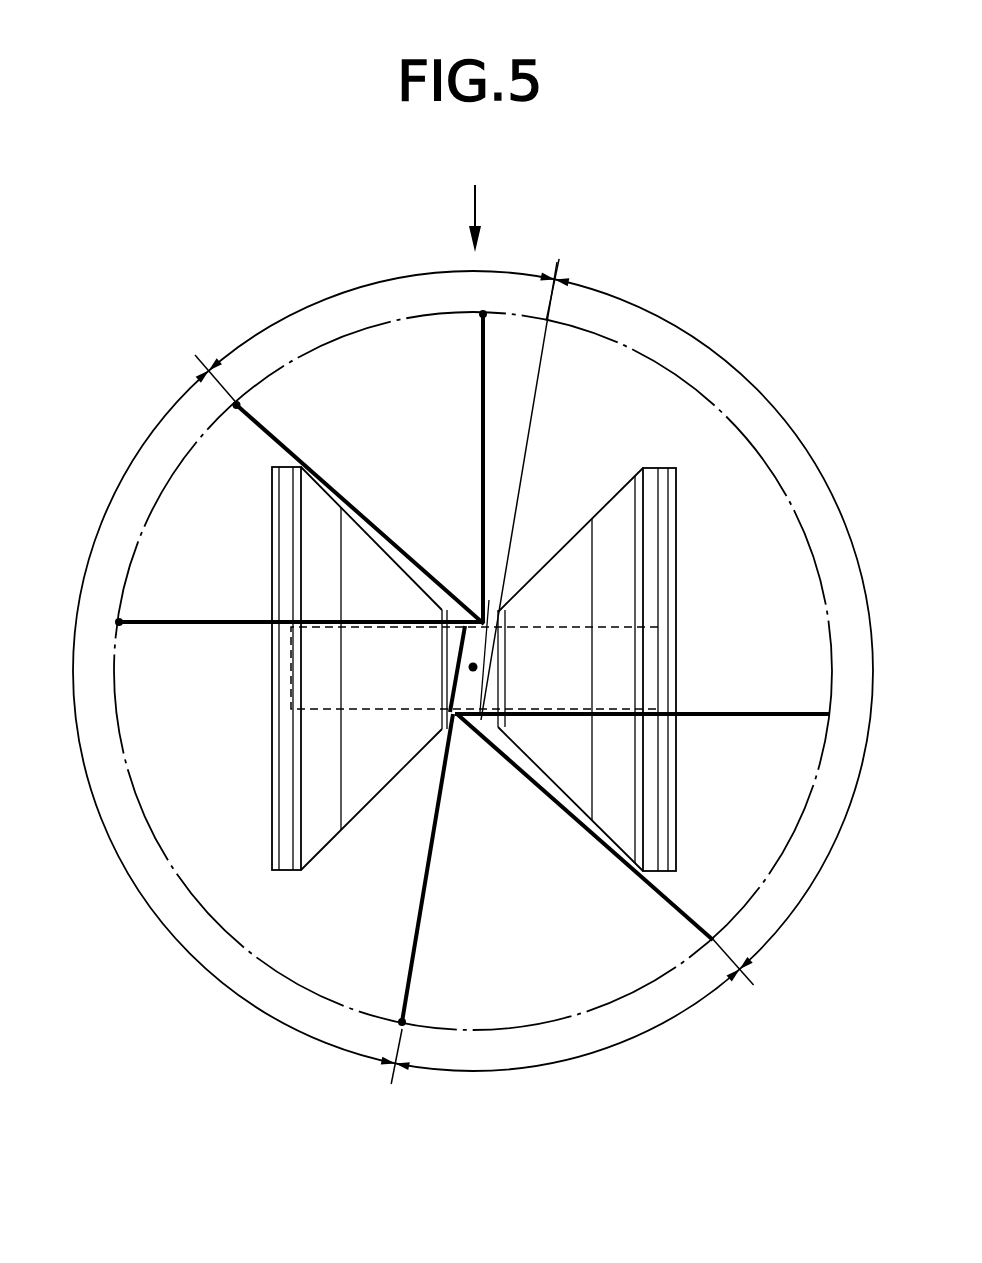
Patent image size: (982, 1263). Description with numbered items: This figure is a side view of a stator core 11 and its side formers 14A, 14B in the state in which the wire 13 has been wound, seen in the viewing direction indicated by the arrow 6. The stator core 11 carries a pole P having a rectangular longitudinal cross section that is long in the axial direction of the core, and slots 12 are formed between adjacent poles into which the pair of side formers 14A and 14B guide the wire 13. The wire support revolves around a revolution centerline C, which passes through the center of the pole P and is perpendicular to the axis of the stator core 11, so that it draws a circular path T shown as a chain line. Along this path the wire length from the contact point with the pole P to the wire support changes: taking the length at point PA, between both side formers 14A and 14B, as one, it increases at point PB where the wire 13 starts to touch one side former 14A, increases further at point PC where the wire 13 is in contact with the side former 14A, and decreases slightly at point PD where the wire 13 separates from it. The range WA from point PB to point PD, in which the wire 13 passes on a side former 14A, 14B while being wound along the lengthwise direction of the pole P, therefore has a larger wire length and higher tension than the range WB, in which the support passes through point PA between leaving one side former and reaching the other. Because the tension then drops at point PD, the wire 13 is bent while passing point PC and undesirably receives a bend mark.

The viewing direction arrow 6 is at (471, 198).
The stator core 11 is at (577, 623).
The slots 12 is at (458, 641).
The wire 13 is at (366, 516).
The side former 14A is at (298, 777).
The side former 14B is at (647, 768).
The pole P is at (476, 660).
The revolution centerline C is at (468, 718).
The circular path T is at (258, 958).
The point PA is at (485, 313).
The point PB is at (238, 403).
The point PC is at (118, 620).
The point PD is at (400, 1020).
The range WA is at (475, 671).
The range WB is at (474, 668).